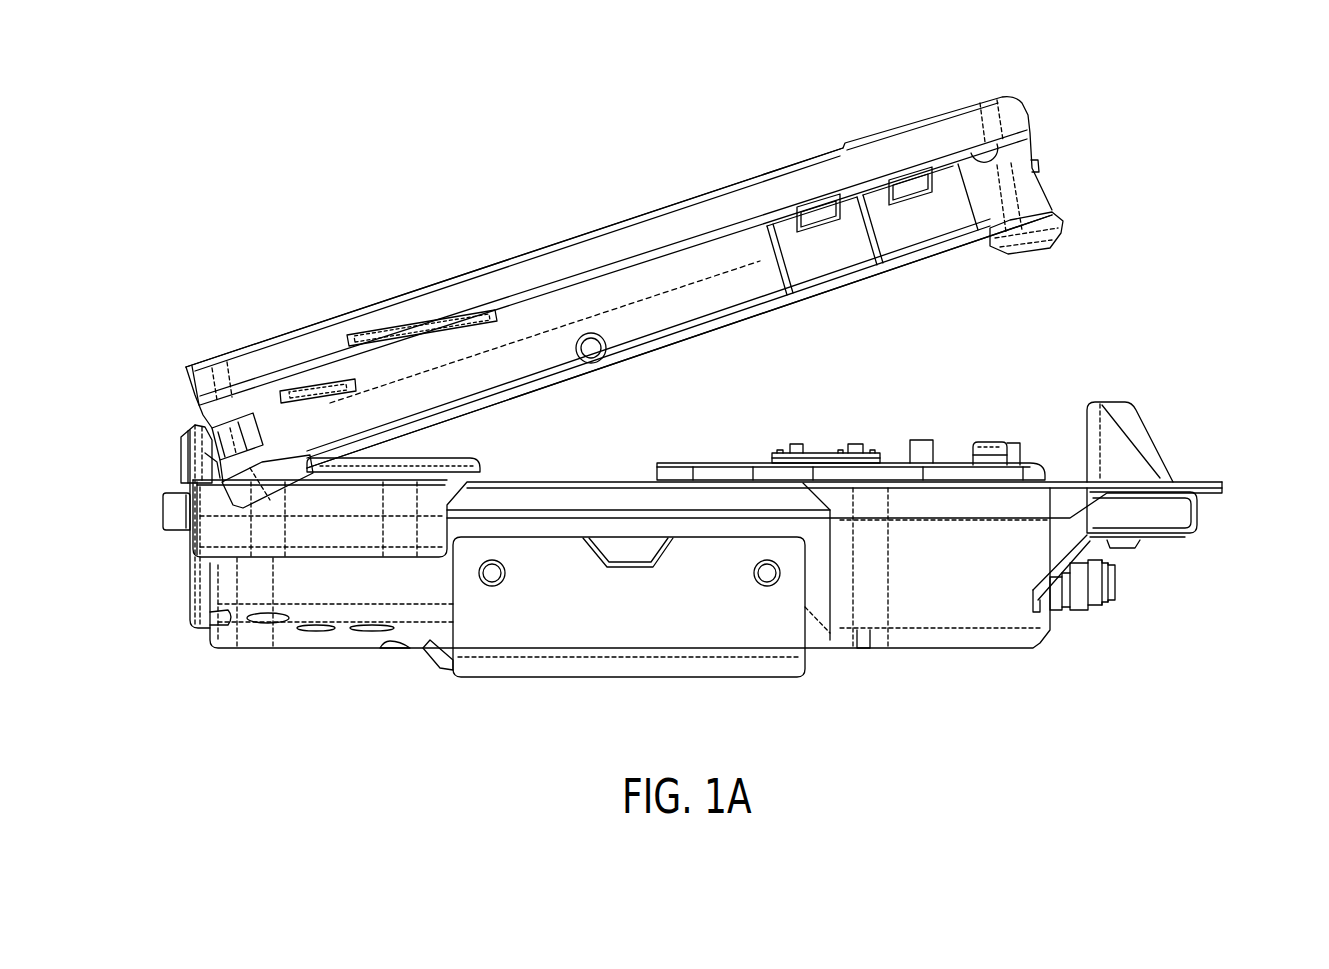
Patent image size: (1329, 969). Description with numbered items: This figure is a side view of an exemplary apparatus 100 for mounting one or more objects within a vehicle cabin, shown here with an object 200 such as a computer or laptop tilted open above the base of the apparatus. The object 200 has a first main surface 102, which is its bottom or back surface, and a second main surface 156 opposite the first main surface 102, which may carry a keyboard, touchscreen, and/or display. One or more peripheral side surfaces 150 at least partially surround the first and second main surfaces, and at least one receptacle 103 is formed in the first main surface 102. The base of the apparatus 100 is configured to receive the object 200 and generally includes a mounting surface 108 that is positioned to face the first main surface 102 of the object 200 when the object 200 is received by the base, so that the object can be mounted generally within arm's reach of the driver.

The apparatus 100 is at (1257, 412).
The object 200 is at (1050, 112).
The first main surface 102 is at (706, 334).
The receptacle 103 is at (912, 232).
The mounting surface 108 is at (1022, 455).
The peripheral side surfaces 150 is at (193, 415).
The second main surface 156 is at (565, 242).